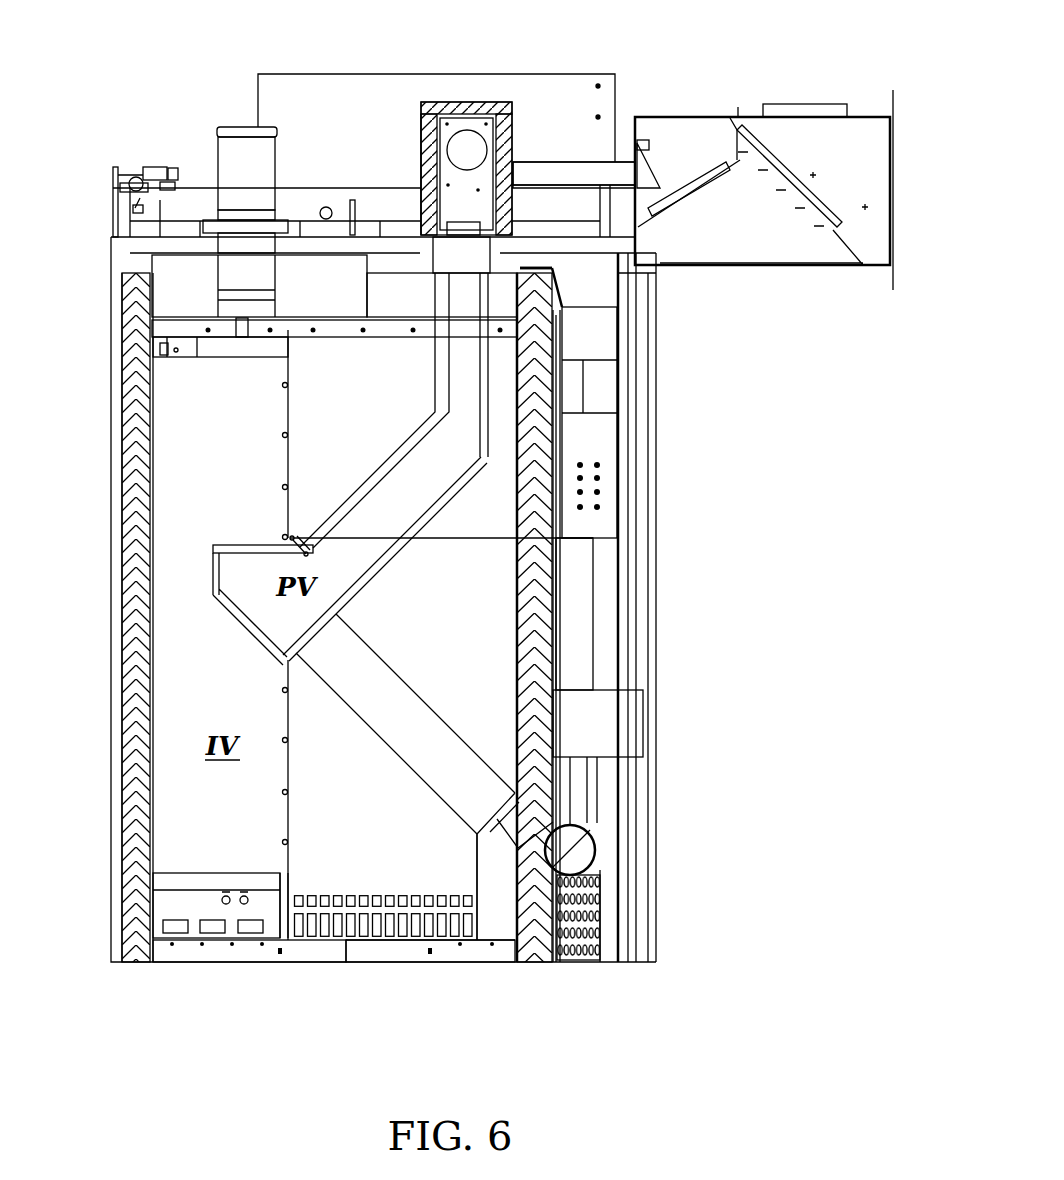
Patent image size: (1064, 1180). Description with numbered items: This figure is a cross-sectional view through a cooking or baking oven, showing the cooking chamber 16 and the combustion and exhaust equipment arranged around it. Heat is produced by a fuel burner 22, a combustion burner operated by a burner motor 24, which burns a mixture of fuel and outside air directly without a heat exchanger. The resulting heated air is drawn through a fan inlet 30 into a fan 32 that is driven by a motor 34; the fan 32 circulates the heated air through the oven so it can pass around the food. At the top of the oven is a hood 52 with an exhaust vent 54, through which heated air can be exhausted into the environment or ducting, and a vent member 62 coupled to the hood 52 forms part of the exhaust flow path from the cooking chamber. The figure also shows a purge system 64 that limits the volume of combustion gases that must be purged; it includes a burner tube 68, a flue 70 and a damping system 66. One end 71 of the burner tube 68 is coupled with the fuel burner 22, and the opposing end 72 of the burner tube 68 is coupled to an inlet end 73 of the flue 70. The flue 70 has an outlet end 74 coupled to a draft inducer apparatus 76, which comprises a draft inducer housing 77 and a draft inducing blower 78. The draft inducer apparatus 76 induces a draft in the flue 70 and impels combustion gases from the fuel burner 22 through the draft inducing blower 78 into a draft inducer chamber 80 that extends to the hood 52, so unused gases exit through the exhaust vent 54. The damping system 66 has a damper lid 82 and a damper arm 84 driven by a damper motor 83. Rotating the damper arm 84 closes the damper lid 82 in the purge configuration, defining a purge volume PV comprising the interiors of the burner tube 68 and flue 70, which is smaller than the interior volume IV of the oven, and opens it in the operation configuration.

The cooking chamber 16 is at (209, 832).
The fuel burner 22 is at (493, 840).
The burner motor 24 is at (575, 850).
The fan inlet 30 is at (243, 340).
The fan 32 is at (183, 287).
The motor 34 is at (233, 160).
The hood 52 is at (897, 138).
The exhaust vent 54 is at (818, 96).
The vent member 62 is at (628, 118).
The purge system 64 is at (412, 630).
The damping system 66 is at (214, 534).
The burner tube 68 is at (387, 895).
The flue 70 is at (427, 478).
The end of burner tube 71 is at (525, 802).
The opposing end of burner tube 72 is at (268, 650).
The inlet end of flue 73 is at (340, 615).
The outlet end of flue 74 is at (548, 252).
The draft inducer apparatus 76 is at (458, 92).
The draft inducer housing 77 is at (420, 130).
The draft inducing blower 78 is at (473, 145).
The draft inducer chamber 80 is at (576, 172).
The damper lid 82 is at (255, 545).
The damper motor 83 is at (643, 735).
The damper arm 84 is at (300, 538).